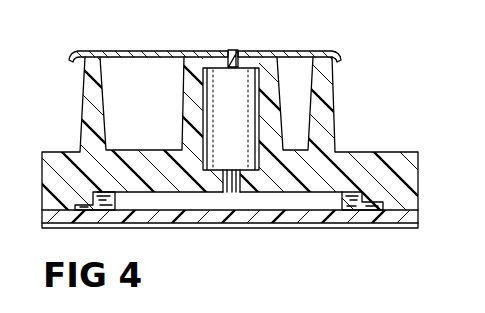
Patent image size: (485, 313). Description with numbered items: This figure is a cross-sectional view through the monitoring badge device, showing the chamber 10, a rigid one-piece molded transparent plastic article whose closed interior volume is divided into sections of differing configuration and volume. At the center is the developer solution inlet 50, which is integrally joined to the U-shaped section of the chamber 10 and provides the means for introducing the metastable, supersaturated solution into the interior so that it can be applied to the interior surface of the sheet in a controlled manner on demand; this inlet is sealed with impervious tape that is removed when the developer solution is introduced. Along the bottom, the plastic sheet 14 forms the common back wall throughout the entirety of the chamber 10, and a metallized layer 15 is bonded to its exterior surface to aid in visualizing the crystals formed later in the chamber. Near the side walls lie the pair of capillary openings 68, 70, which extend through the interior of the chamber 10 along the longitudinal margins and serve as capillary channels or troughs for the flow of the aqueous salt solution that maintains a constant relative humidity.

The chamber 10 is at (140, 203).
The plastic sheet 14 is at (200, 215).
The metallized layer 15 is at (268, 224).
The developer solution inlet 50 is at (244, 133).
The capillary opening 68 is at (92, 197).
The capillary opening 70 is at (367, 201).